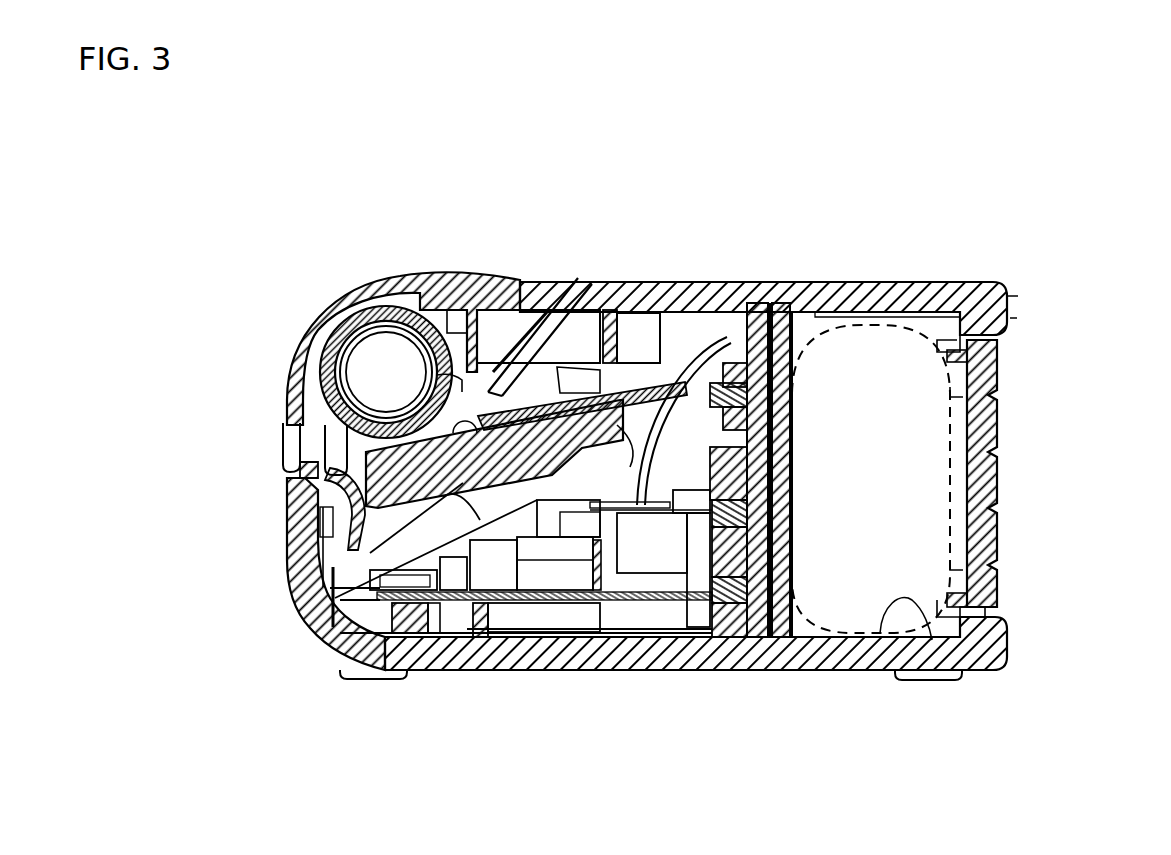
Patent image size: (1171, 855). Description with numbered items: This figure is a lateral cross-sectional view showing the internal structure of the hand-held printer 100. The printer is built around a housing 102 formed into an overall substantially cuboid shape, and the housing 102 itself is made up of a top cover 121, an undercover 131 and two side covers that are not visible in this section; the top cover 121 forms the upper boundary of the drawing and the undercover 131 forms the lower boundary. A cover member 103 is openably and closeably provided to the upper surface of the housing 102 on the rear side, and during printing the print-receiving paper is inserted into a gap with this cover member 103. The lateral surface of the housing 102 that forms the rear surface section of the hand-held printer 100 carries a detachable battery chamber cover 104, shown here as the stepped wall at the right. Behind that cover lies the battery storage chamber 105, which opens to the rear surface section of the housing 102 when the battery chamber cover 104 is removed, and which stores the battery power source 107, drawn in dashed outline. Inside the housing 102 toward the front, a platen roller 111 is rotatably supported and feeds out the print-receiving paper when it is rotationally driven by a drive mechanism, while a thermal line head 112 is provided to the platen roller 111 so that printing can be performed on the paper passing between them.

The hand-held printer 100 is at (900, 178).
The housing 102 is at (282, 484).
The cover member 103 is at (440, 277).
The battery chamber cover 104 is at (997, 356).
The battery storage chamber 105 is at (882, 612).
The battery power source 107 is at (910, 338).
The platen roller 111 is at (333, 330).
The thermal line head 112 is at (512, 462).
The top cover 121 is at (697, 282).
The undercover 131 is at (653, 670).